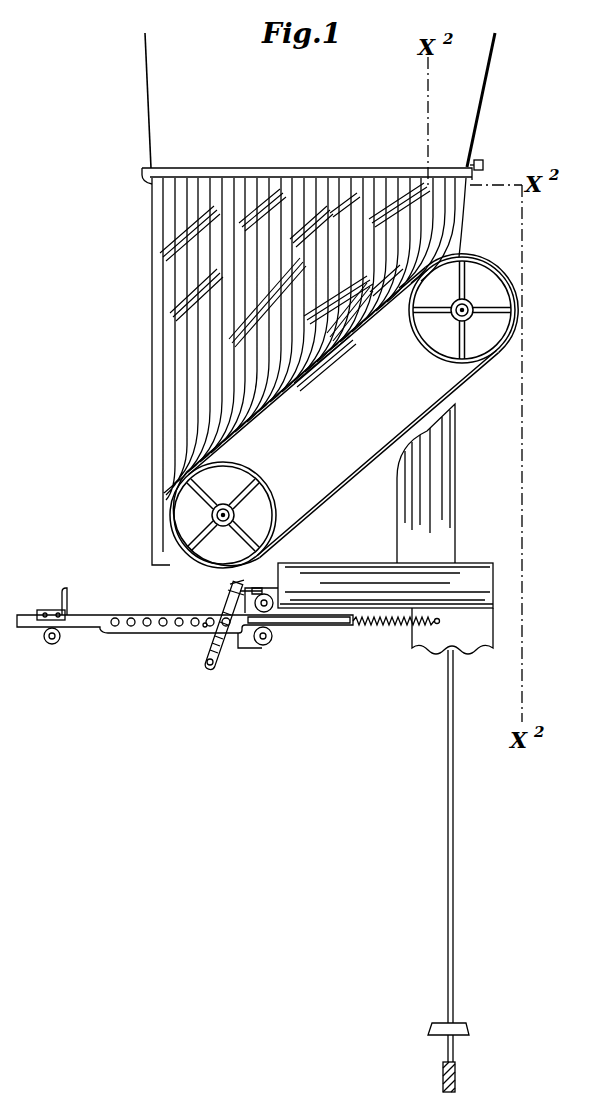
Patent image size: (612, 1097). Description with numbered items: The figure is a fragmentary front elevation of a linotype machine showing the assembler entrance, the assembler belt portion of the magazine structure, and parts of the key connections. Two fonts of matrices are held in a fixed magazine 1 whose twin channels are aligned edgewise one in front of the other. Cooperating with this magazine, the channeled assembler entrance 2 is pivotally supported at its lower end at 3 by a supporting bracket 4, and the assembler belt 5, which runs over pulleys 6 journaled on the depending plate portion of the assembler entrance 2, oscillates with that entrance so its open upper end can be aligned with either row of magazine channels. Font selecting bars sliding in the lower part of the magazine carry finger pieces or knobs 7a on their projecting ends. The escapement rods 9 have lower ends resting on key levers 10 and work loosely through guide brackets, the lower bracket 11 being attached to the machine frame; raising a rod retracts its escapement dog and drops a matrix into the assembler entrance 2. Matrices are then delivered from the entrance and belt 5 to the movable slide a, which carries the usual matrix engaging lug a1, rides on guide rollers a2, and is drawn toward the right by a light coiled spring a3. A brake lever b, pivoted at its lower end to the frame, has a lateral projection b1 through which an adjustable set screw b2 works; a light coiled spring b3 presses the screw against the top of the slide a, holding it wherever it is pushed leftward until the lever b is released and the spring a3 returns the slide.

The fixed magazine 1 is at (318, 299).
The assembler entrance 2 is at (307, 365).
The pivot of the assembler entrance 3 is at (493, 583).
The supporting bracket 4 is at (485, 636).
The assembler belt 5 is at (482, 367).
The pulleys 6 is at (512, 316).
The finger pieces or knobs 7a is at (484, 165).
The escapement rods 9 is at (447, 481).
The key levers 10 is at (455, 1074).
The lower guide bracket 11 is at (464, 1028).
The movable slide a is at (88, 615).
The matrix engaging lug a1 is at (60, 600).
The guide rollers a2 is at (50, 643).
The coiled spring a3 is at (392, 627).
The brake lever b is at (207, 645).
The lateral projection b1 is at (231, 597).
The adjustable set screw b2 is at (200, 624).
The coiled spring b3 is at (276, 590).